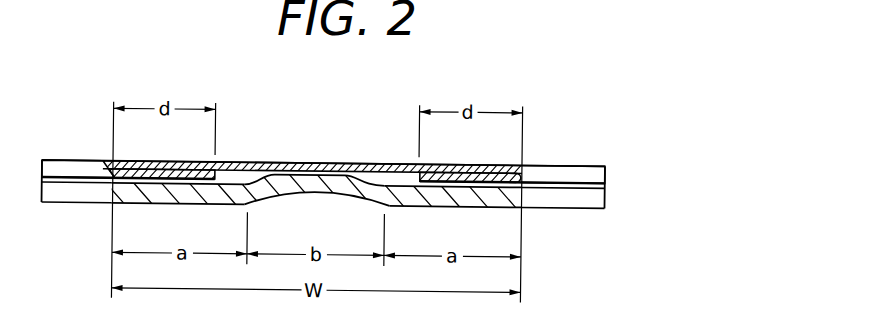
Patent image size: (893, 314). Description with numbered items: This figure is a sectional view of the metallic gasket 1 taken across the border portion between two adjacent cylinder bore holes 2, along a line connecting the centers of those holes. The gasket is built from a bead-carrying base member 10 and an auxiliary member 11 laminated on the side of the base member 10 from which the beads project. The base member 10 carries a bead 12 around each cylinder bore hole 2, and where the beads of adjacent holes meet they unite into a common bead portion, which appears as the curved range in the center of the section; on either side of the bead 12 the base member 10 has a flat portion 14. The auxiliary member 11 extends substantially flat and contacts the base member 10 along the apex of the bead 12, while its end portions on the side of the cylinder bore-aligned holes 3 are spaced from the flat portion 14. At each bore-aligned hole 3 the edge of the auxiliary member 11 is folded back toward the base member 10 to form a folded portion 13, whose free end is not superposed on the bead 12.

The metallic gasket 1 is at (322, 160).
The cylinder bore hole 2 is at (112, 188).
The cylinder bore-aligned hole 3 is at (100, 160).
The bead-carrying base member 10 is at (401, 201).
The auxiliary member 11 is at (381, 160).
The bead 12 is at (301, 188).
The folded portion 13 is at (195, 170).
The flat portion 14 is at (167, 191).